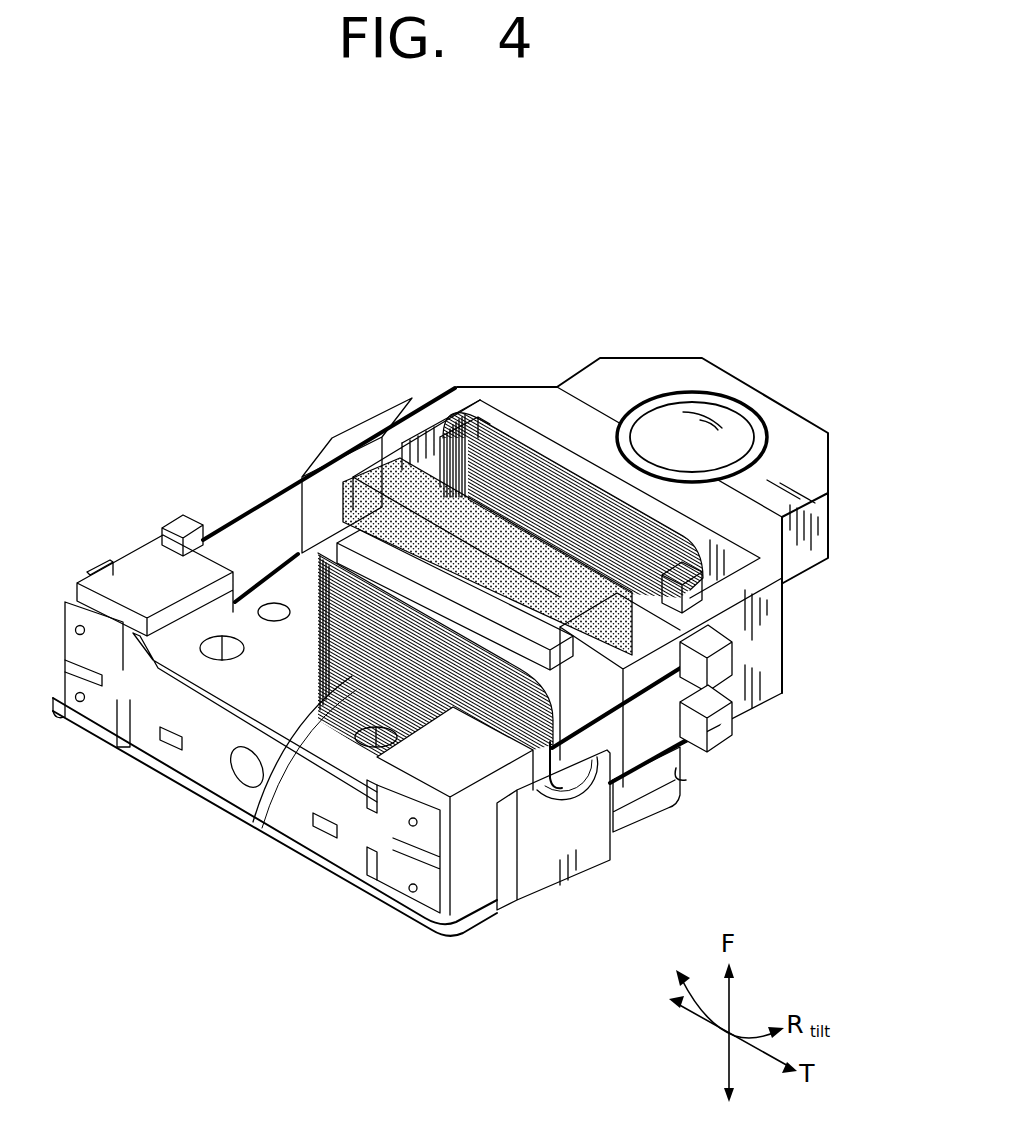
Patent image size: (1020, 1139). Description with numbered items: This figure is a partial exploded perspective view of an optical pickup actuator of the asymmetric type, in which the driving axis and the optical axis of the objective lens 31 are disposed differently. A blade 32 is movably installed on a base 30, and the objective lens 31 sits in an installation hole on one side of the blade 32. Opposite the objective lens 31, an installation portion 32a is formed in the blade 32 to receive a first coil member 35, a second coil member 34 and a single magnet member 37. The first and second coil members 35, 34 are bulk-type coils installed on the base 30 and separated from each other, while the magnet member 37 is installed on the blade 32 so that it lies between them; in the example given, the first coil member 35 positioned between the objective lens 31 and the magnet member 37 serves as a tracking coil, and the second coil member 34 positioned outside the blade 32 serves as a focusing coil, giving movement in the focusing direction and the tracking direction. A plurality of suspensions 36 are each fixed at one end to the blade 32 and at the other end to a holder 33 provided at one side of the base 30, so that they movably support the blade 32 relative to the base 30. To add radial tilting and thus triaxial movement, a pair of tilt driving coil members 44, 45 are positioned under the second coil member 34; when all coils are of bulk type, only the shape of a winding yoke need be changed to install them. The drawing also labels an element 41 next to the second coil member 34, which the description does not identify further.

The base 30 is at (627, 807).
The objective lens 31 is at (695, 417).
The blade 32 is at (610, 372).
The installation portion 32a is at (402, 430).
The holder 33 is at (131, 566).
The second coil member 34 is at (287, 547).
The first coil member 35 is at (478, 440).
The suspensions 36 is at (262, 497).
The magnet member 37 is at (377, 490).
The tracking coil 41 is at (360, 543).
The tilt driving coil member 44 is at (255, 818).
The tilt driving coil member 45 is at (548, 790).